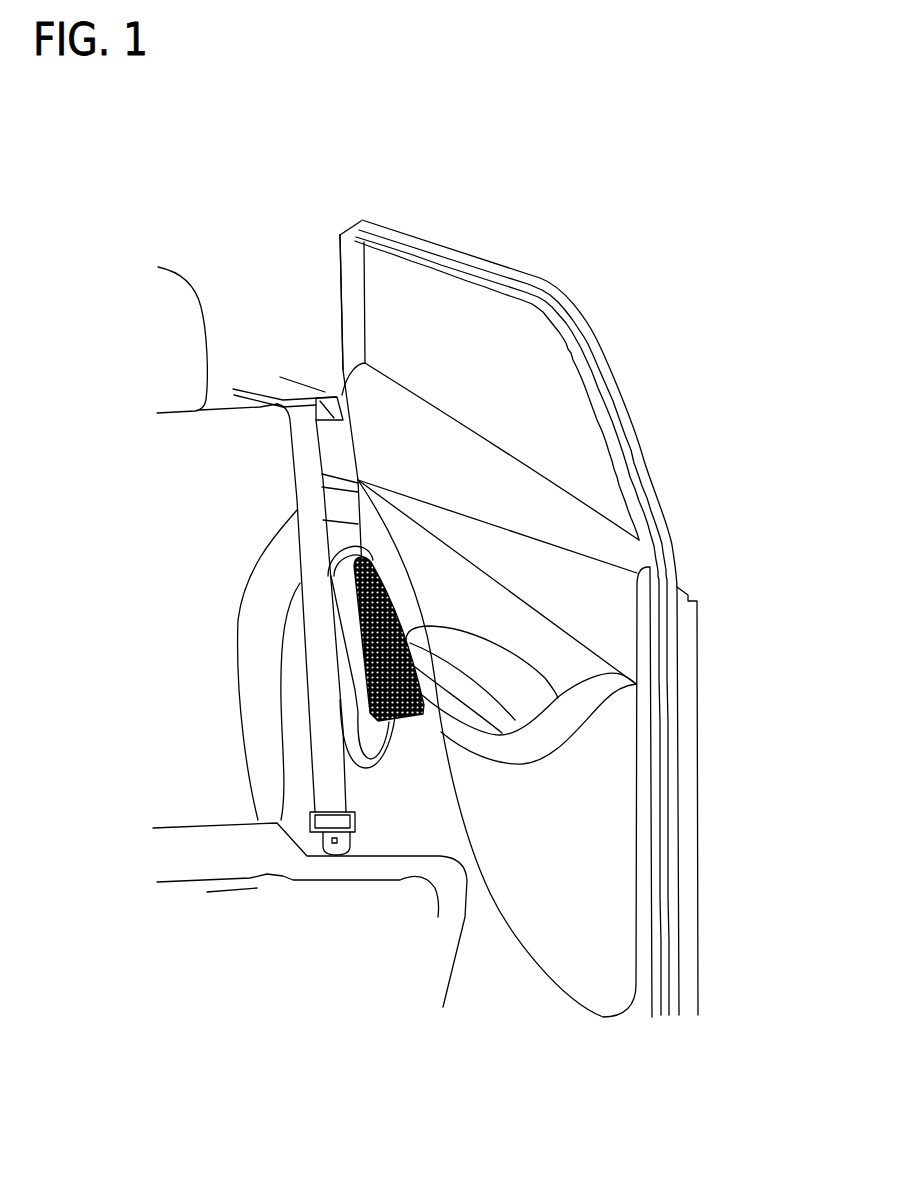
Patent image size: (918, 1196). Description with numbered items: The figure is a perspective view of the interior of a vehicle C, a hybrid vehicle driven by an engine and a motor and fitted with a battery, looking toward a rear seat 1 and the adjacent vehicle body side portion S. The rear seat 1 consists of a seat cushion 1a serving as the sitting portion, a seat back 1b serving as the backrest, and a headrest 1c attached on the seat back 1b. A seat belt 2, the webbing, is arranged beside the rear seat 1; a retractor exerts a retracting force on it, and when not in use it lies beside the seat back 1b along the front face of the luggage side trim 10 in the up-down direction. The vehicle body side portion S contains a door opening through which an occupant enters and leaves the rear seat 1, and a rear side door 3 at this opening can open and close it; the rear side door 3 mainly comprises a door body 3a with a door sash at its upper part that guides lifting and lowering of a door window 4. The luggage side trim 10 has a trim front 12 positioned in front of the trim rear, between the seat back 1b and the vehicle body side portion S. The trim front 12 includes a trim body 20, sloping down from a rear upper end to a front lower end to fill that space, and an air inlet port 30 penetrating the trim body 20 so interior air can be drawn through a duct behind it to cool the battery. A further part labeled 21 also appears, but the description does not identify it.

The rear seat 1 is at (193, 252).
The seat cushion 1a is at (257, 887).
The seat back 1b is at (238, 457).
The headrest 1c is at (200, 307).
The seat belt 2 is at (302, 440).
The rear side door 3 is at (557, 282).
The door body 3a is at (592, 922).
The door window 4 is at (467, 327).
The luggage side trim 10 is at (420, 802).
The trim front 12 is at (603, 767).
The trim body 20 is at (415, 777).
The seat belt webbing 21 is at (340, 637).
The air inlet port 30 is at (372, 558).
The vehicle C is at (409, 178).
The vehicle body side portion S is at (683, 535).